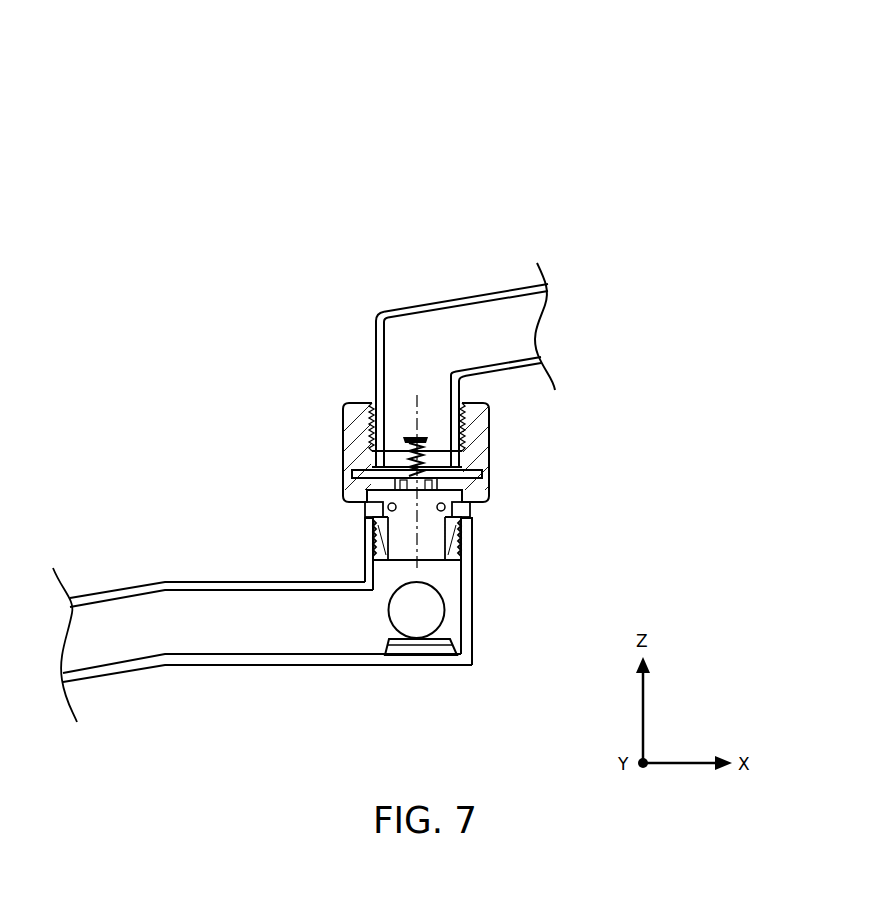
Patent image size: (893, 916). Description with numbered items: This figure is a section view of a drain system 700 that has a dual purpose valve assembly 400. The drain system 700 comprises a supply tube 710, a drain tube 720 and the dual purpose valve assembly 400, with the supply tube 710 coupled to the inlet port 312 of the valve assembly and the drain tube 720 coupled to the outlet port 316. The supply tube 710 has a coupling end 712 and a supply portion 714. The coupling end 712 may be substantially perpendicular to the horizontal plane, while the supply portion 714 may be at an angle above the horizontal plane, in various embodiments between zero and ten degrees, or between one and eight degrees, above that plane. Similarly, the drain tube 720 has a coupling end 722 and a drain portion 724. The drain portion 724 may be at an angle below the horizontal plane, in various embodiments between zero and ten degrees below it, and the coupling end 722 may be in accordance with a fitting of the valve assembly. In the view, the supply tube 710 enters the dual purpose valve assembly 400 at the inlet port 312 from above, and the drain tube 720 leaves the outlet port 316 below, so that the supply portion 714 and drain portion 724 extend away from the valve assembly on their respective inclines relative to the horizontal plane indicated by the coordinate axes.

The drain system 700 is at (215, 103).
The supply tube 710 is at (483, 322).
The supply portion 714 is at (517, 290).
The coupling end 712 is at (377, 382).
The dual purpose valve assembly 400 is at (355, 420).
The inlet port 312 is at (372, 410).
The outlet port 316 is at (430, 533).
The coupling end 722 is at (365, 550).
The drain tube 720 is at (129, 632).
The drain portion 724 is at (97, 673).